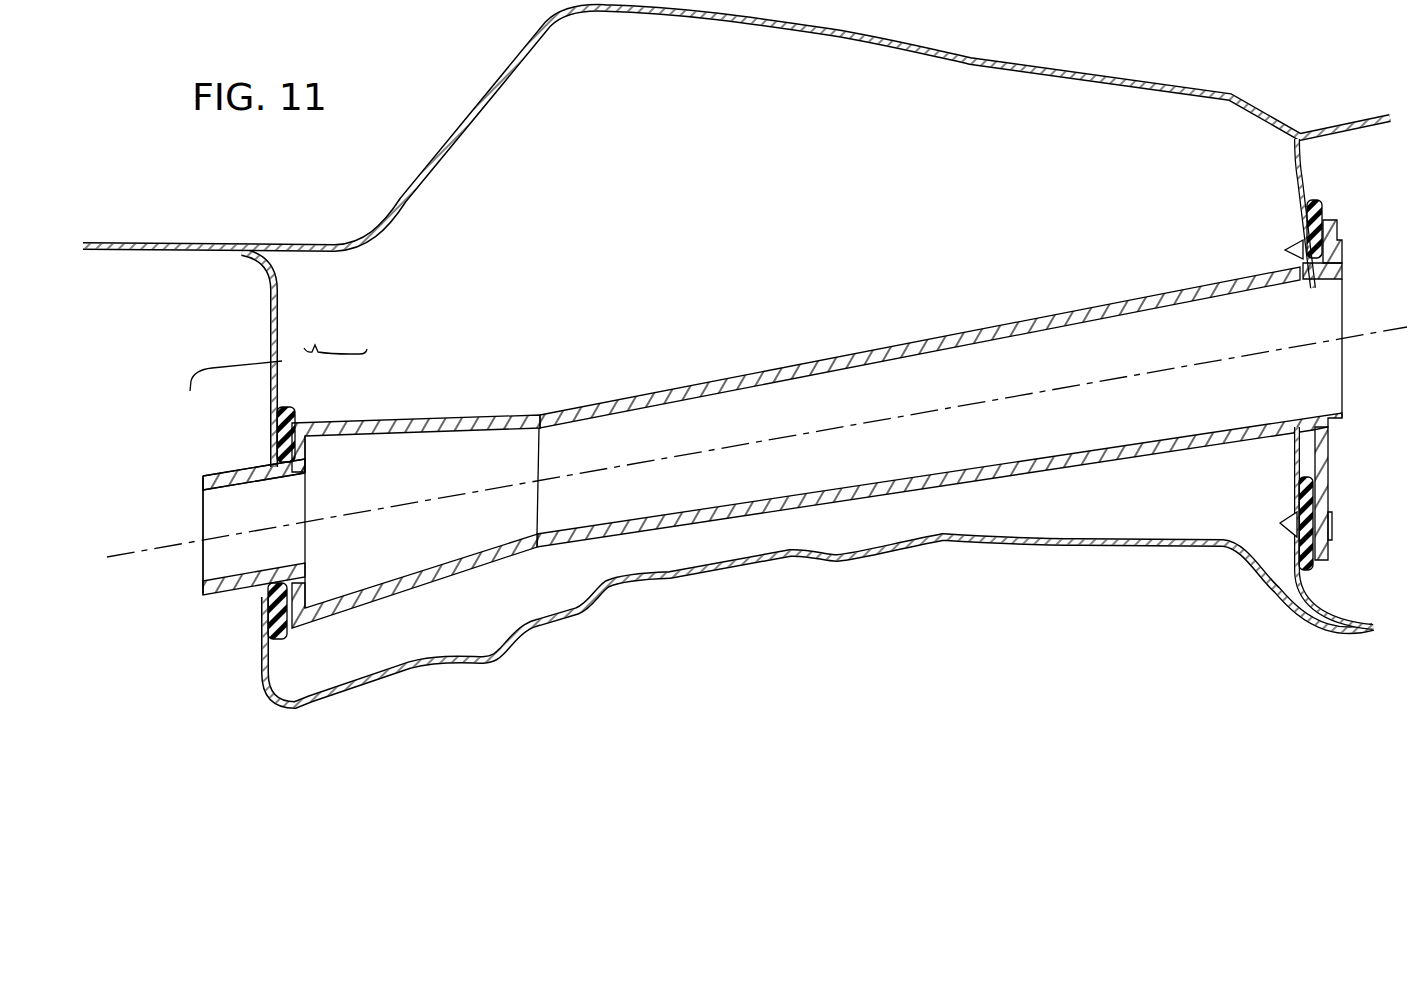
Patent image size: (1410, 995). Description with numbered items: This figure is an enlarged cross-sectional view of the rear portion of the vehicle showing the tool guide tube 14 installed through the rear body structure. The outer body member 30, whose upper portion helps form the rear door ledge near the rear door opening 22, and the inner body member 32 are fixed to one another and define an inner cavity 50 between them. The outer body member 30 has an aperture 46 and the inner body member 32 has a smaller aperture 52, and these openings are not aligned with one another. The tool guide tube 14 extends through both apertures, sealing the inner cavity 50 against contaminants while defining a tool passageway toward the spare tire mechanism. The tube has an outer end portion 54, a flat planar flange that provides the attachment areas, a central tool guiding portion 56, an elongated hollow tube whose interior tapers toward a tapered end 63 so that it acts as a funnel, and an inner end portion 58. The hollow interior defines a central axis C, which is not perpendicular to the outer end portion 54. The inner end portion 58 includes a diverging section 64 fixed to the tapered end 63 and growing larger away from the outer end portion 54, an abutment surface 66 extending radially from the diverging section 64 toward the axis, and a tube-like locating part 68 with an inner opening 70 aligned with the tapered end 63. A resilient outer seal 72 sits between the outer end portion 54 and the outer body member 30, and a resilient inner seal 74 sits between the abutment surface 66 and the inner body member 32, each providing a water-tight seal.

The tool guide tube 14 is at (914, 286).
The rear door opening 22 is at (628, 14).
The outer body member 30 is at (1296, 170).
The inner body member 32 is at (685, 578).
The aperture 46 is at (1307, 282).
The inner cavity 50 is at (624, 205).
The aperture 52 is at (271, 483).
The outer end portion 54 is at (1338, 228).
The central tool guiding portion 56 is at (710, 380).
The inner end portion 58 is at (278, 355).
The tapered end 63 is at (542, 440).
The diverging section 64 is at (353, 422).
The abutment surface 66 is at (275, 434).
The locating part 68 is at (224, 468).
The inner opening 70 is at (202, 567).
The outer seal 72 is at (1316, 565).
The inner seal 74 is at (283, 640).
The central axis C is at (697, 452).